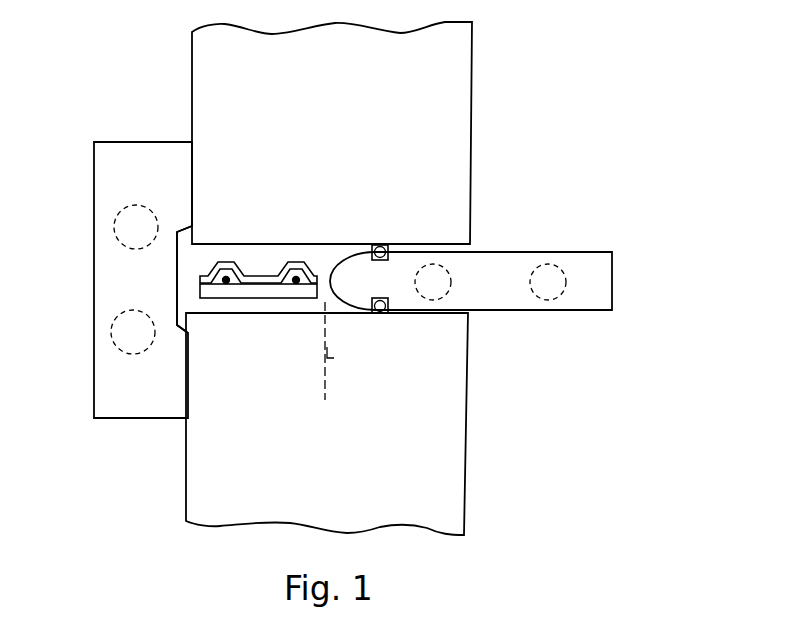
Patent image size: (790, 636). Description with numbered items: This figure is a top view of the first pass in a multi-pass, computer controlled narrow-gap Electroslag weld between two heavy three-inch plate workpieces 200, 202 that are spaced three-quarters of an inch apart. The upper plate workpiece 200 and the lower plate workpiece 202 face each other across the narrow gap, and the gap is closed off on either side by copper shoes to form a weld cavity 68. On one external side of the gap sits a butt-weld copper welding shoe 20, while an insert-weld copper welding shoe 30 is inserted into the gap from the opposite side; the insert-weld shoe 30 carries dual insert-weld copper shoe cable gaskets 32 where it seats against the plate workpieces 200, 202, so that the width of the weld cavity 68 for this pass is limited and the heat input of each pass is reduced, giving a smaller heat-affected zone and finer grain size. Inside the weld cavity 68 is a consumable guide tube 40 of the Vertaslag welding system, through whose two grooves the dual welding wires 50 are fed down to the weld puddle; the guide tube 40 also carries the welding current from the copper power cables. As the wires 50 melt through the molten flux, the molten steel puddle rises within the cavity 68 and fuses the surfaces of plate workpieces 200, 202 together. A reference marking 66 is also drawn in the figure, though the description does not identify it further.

The butt-weld copper welding shoe 20 is at (135, 142).
The plate workpiece 200 is at (423, 77).
The plate workpiece 202 is at (413, 452).
The insert-weld copper welding shoe 30 is at (612, 273).
The insert-weld copper shoe cable gaskets 32 is at (378, 246).
The consumable guide tube 40 is at (203, 282).
The welding wires 50 is at (223, 273).
The centerline 66 is at (325, 383).
The weld cavity 68 is at (323, 258).